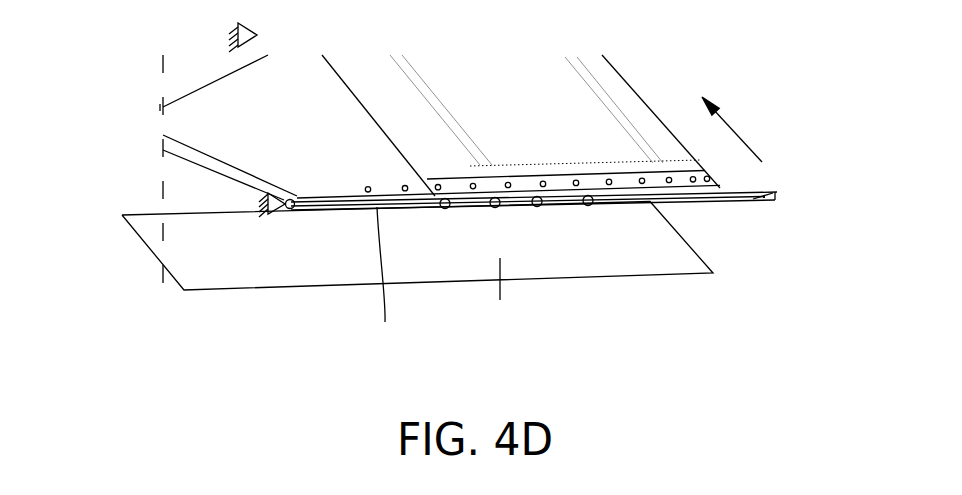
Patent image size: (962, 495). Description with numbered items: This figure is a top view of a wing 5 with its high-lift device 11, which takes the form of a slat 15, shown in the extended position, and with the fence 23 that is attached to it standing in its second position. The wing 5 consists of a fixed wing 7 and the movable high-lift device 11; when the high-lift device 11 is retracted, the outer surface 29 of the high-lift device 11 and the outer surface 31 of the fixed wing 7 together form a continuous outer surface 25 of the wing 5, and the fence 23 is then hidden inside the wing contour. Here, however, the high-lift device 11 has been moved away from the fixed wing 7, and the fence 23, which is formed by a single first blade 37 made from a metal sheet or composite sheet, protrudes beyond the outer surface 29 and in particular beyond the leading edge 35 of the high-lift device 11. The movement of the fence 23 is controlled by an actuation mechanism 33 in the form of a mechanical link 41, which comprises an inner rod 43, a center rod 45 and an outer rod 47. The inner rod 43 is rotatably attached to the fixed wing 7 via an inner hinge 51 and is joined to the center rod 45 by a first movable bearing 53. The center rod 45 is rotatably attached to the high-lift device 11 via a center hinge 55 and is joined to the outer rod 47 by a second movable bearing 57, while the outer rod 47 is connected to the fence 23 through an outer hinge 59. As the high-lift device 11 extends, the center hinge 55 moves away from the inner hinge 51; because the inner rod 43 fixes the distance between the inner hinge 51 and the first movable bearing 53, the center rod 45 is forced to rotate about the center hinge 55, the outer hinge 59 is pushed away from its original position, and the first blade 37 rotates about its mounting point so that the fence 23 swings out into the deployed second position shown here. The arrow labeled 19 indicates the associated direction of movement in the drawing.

The wing 5 is at (112, 156).
The fixed wing 7 is at (420, 259).
The high-lift device 11 is at (585, 96).
The slat 15 is at (513, 97).
The direction of movement 19 is at (733, 127).
The fence 23 is at (772, 193).
The outer surface of the wing 25 is at (407, 102).
The outer surface of the high-lift device 29 is at (365, 82).
The outer surface of the fixed wing 31 is at (500, 300).
The actuation mechanism 33 is at (308, 83).
The leading edge 35 is at (657, 113).
The first blade 37 is at (720, 196).
The mechanical link 41 is at (338, 259).
The inner rod 43 is at (385, 322).
The center rod 45 is at (537, 206).
The outer rod 47 is at (588, 205).
The inner hinge 51 is at (290, 209).
The first movable bearing 53 is at (445, 209).
The center hinge 55 is at (495, 207).
The second movable bearing 57 is at (538, 206).
The outer hinge 59 is at (593, 207).